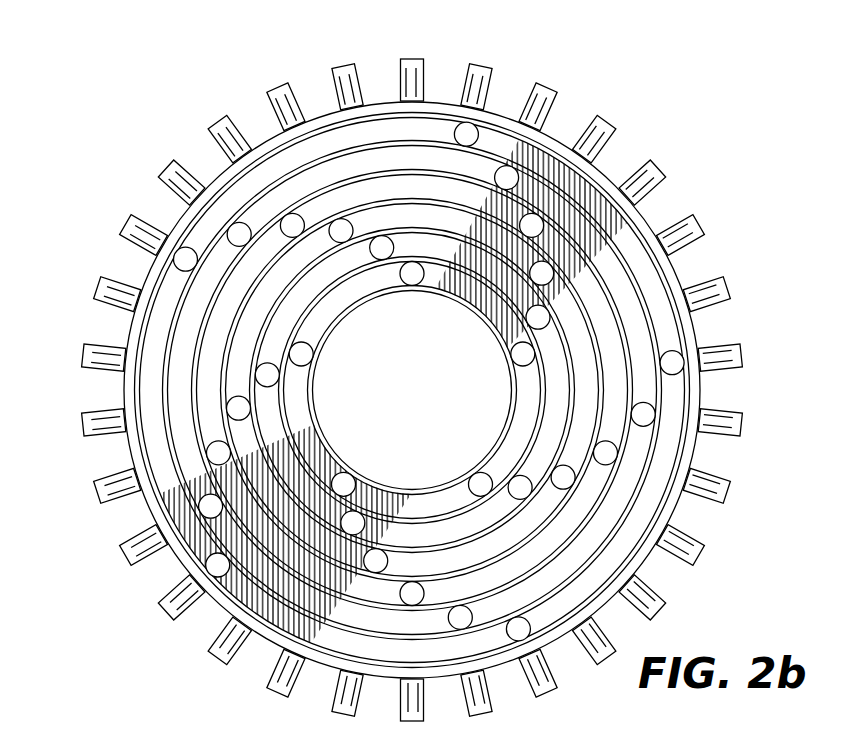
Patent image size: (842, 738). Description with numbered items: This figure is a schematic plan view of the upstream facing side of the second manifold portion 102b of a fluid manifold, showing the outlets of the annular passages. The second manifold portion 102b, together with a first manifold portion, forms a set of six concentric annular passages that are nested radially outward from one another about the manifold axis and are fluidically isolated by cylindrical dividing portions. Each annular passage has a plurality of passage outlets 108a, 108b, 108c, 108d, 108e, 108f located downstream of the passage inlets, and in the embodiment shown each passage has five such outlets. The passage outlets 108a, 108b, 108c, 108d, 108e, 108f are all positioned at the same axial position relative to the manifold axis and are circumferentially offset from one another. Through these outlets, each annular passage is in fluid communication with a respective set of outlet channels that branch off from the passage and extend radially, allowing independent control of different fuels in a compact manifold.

The second manifold portion 102b is at (191, 76).
The passage outlets 108a is at (313, 357).
The passage outlets 108b is at (391, 239).
The passage outlets 108c is at (351, 222).
The passage outlets 108d is at (296, 213).
The passage outlets 108e is at (227, 233).
The passage outlets 108f is at (174, 258).